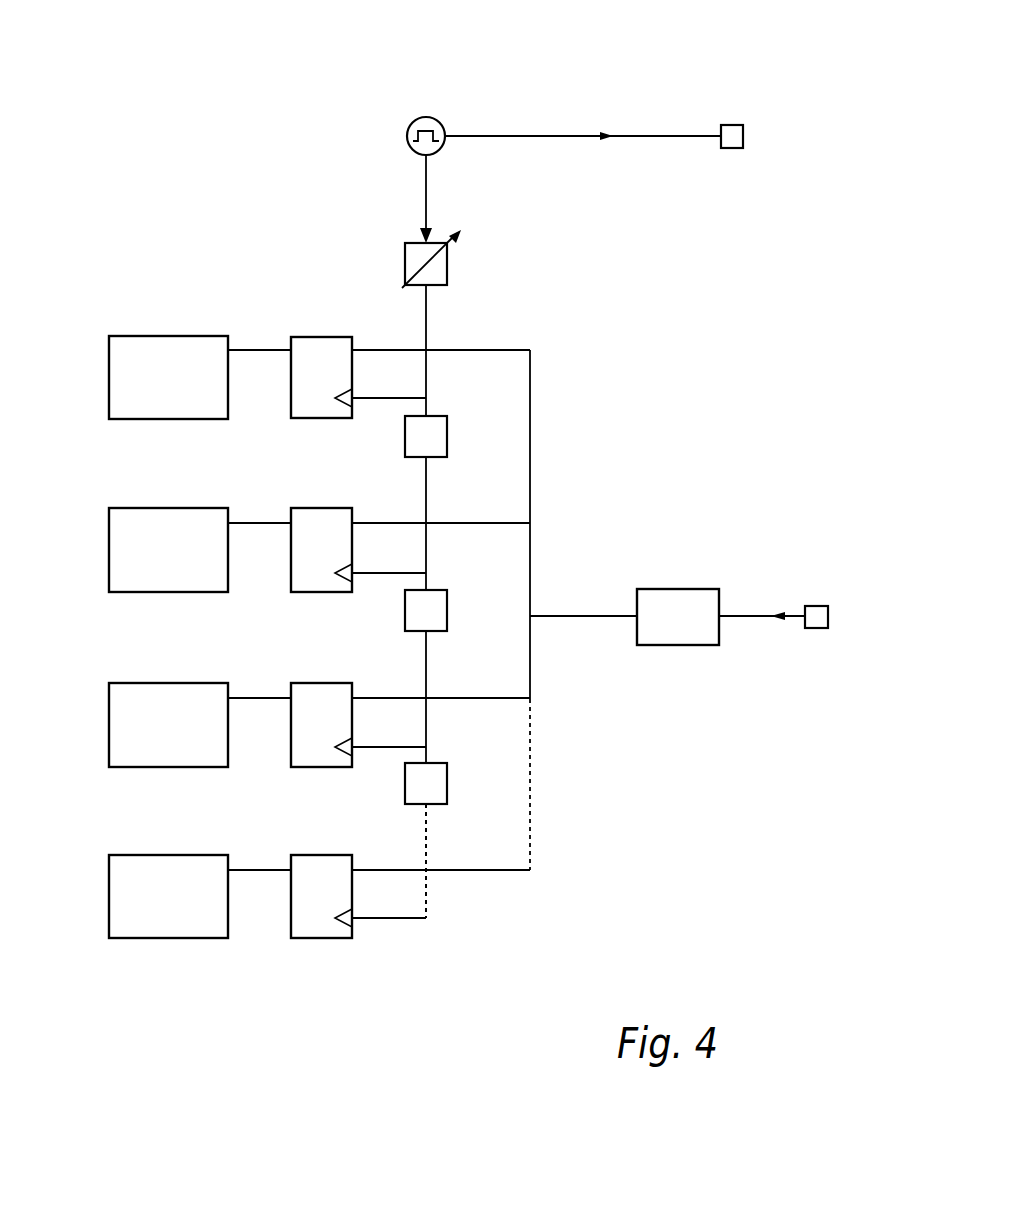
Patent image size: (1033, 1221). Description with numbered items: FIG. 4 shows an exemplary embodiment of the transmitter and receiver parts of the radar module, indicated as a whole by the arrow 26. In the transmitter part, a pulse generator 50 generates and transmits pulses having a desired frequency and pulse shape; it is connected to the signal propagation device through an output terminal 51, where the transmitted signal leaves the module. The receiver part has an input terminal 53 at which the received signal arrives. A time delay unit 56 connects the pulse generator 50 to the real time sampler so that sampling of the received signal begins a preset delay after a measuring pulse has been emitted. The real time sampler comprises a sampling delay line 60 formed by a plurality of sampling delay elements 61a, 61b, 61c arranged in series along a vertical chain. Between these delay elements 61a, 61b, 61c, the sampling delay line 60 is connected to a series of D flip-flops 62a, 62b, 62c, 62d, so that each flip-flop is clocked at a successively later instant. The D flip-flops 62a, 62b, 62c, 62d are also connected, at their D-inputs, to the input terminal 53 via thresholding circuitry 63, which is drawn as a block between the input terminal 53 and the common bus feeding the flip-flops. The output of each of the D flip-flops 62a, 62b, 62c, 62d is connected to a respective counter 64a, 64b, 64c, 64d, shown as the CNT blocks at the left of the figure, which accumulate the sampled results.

The time-to-digital converter circuit 26 is at (520, 80).
The pulse generator 50 is at (445, 148).
The output terminal 51 is at (735, 125).
The input terminal 53 is at (820, 606).
The time delay unit 56 is at (448, 262).
The sampling delay line 60 is at (428, 905).
The sampling delay element 61a is at (447, 438).
The sampling delay element 61b is at (447, 612).
The sampling delay element 61c is at (447, 785).
The D flip-flop 62a is at (306, 337).
The D flip-flop 62b is at (308, 517).
The D flip-flop 62c is at (312, 690).
The D flip-flop 62d is at (318, 865).
The thresholding circuitry 63 is at (678, 589).
The counter 64a is at (109, 380).
The counter 64b is at (118, 556).
The counter 64c is at (120, 728).
The counter 64d is at (117, 899).